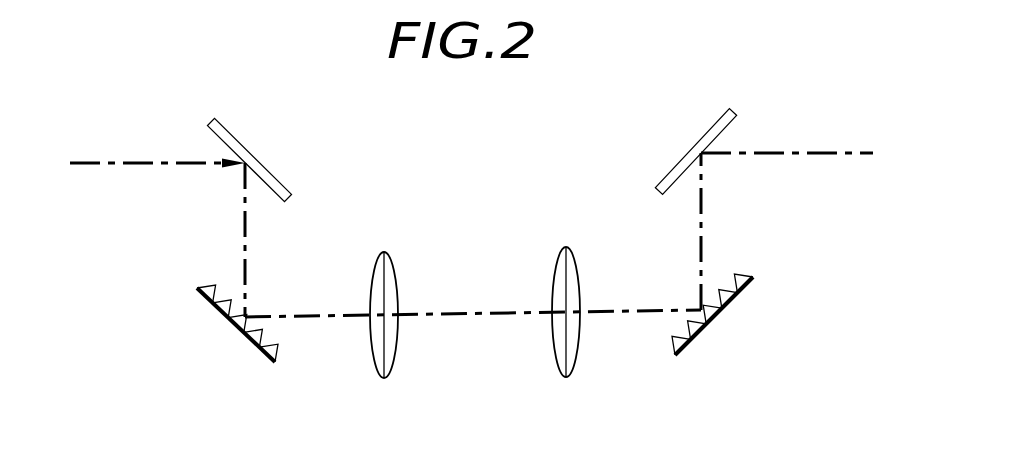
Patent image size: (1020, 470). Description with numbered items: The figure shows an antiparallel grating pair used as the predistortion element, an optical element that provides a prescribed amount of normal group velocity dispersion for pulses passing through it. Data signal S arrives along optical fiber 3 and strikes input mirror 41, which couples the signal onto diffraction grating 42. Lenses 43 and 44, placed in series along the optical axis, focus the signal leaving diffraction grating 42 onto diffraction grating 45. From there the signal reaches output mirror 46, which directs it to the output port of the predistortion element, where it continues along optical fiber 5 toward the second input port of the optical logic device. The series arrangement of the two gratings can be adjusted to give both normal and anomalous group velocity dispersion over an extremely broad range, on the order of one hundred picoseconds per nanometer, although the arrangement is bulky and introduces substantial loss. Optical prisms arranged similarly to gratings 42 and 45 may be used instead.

The optical fiber 3 is at (80, 164).
The optical fiber 5 is at (826, 152).
The input mirror 41 is at (236, 140).
The diffraction grating 42 is at (214, 302).
The lens 43 is at (383, 251).
The lens 44 is at (565, 247).
The diffraction grating 45 is at (740, 290).
The output mirror 46 is at (717, 128).